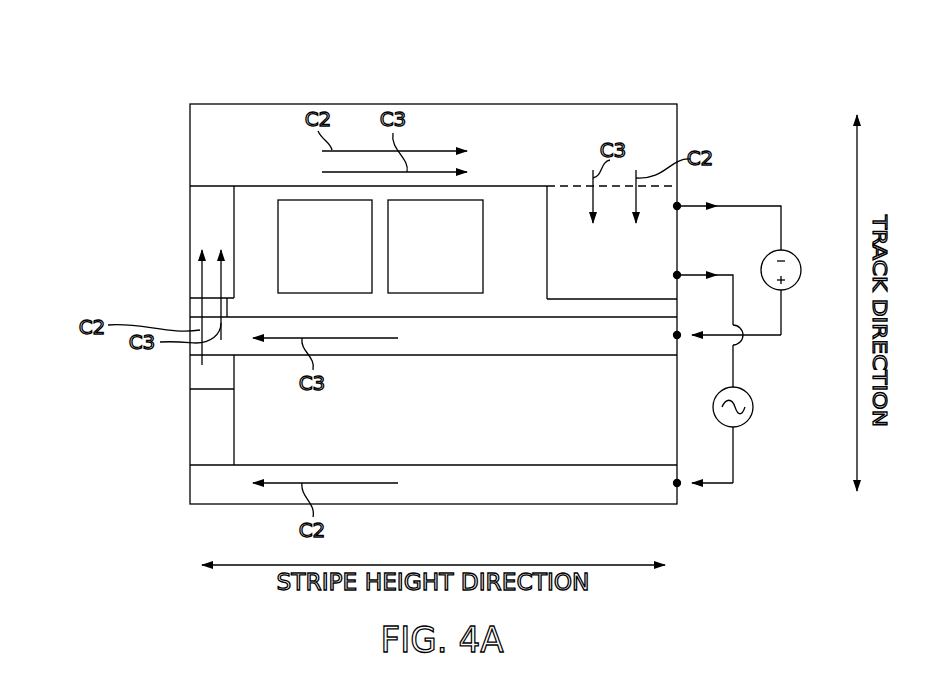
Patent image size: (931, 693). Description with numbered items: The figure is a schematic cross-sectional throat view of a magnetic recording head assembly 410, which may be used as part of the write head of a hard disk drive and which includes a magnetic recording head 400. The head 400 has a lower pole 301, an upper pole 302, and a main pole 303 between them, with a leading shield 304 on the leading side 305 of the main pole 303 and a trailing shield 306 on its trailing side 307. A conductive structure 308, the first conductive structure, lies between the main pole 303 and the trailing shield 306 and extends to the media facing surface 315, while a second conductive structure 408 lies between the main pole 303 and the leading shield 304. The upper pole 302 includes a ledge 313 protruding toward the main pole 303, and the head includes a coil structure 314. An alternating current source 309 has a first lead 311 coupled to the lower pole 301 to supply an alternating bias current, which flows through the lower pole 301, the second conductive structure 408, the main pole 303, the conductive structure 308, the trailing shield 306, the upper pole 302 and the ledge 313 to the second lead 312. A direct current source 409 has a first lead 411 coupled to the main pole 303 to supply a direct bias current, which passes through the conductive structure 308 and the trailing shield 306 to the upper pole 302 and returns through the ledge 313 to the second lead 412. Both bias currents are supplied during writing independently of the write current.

The magnetic recording head 400 is at (182, 137).
The magnetic recording head assembly 410 is at (135, 50).
The lower pole 301 is at (494, 494).
The upper pole 302 is at (520, 141).
The main pole 303 is at (490, 346).
The leading shield 304 is at (207, 438).
The leading side 305 is at (257, 367).
The trailing shield 306 is at (210, 222).
The trailing side 307 is at (258, 312).
The conductive structure 308 is at (198, 308).
The alternating current source 309 is at (748, 420).
The first lead 311 is at (680, 486).
The second lead 312 is at (678, 274).
The ledge 313 is at (570, 269).
The coil structure 314 is at (307, 257).
The media facing surface 315 is at (192, 250).
The second conductive structure 408 is at (202, 373).
The direct current source 409 is at (795, 286).
The first lead 411 is at (680, 337).
The second lead 412 is at (678, 205).